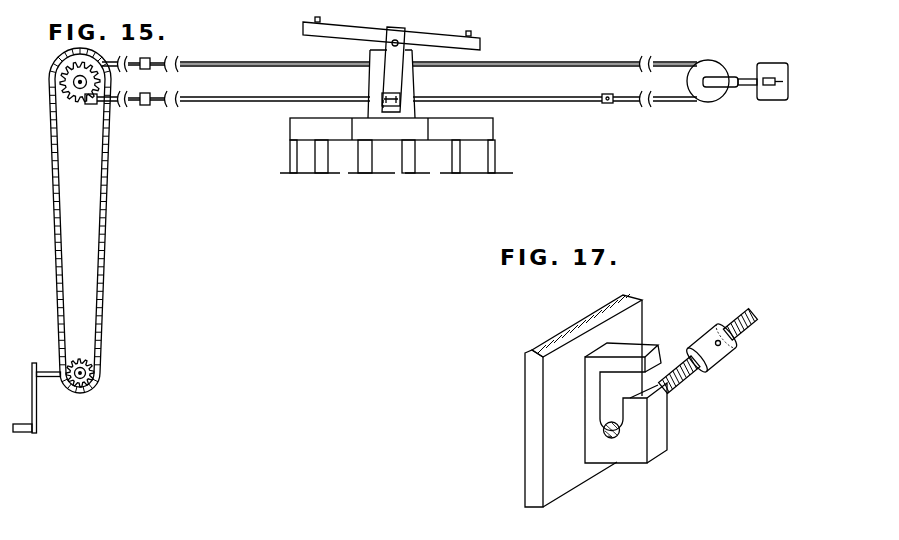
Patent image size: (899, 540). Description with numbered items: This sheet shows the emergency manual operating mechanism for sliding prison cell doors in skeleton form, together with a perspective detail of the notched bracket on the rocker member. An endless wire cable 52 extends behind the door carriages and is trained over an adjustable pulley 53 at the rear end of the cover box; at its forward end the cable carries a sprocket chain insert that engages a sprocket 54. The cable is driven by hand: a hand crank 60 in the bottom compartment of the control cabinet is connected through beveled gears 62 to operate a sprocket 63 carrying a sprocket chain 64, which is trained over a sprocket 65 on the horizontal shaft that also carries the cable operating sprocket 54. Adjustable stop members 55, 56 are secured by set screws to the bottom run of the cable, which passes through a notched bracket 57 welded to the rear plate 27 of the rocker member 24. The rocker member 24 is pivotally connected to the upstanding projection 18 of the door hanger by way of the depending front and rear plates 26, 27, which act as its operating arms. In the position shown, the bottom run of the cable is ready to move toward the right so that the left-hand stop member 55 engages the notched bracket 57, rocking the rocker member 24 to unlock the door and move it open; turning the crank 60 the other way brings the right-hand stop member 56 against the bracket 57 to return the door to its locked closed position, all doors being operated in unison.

In FIG. 15, the upstanding projection 18 is at (375, 50).
In FIG. 15, the rocker member 24 is at (423, 37).
In FIG. 15, the front plate 26 is at (403, 80).
In FIG. 17, the rear plate 27 is at (525, 358).
In FIG. 15, the endless wire cable 52 is at (537, 60).
In FIG. 17, the endless wire cable 52 is at (752, 308).
In FIG. 15, the adjustable pulley 53 is at (700, 93).
In FIG. 15, the sprocket 54 is at (56, 98).
In FIG. 15, the stop member 55 is at (370, 95).
In FIG. 17, the stop member 55 is at (727, 363).
In FIG. 15, the stop member 56 is at (596, 107).
In FIG. 15, the notched bracket 57 is at (383, 102).
In FIG. 17, the notched bracket 57 is at (663, 427).
In FIG. 15, the hand crank 60 is at (34, 415).
In FIG. 15, the beveled gears 62 is at (87, 375).
In FIG. 15, the sprocket 63 is at (97, 361).
In FIG. 15, the sprocket chain 64 is at (107, 267).
In FIG. 15, the sprocket 65 is at (100, 112).